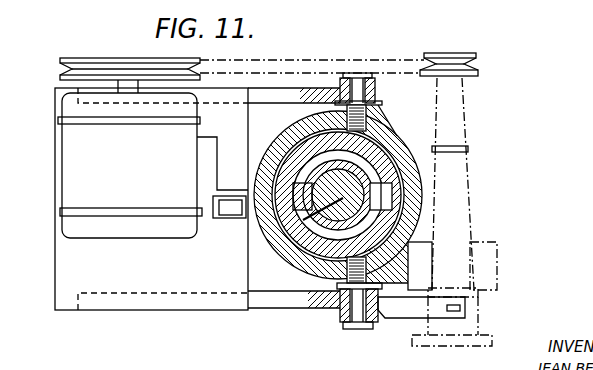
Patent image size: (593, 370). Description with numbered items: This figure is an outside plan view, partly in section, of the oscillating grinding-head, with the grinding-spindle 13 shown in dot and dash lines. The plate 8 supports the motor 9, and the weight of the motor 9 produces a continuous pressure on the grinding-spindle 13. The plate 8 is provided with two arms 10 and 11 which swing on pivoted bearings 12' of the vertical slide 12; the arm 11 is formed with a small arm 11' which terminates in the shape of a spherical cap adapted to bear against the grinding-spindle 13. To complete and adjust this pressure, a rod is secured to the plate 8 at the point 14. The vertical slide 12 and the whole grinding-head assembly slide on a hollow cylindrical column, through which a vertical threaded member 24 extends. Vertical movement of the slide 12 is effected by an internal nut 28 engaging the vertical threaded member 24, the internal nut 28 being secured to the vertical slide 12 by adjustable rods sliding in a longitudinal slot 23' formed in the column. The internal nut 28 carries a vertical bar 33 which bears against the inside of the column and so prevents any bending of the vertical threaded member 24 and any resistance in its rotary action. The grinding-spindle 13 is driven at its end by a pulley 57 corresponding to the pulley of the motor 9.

The plate 8 is at (75, 267).
The motor 9 is at (85, 147).
The arm 10 is at (292, 90).
The arm 11 is at (294, 316).
The small arm 11' is at (421, 325).
The vertical slide 12 is at (343, 197).
The pivoted bearings 12' is at (359, 197).
The grinding-spindle 13 is at (455, 185).
The point 14 is at (231, 208).
The longitudinal slot 23' is at (436, 202).
The vertical threaded member 24 is at (356, 173).
The internal nut 28 is at (345, 170).
The vertical bar 33 is at (283, 168).
The pulley 57 is at (470, 56).